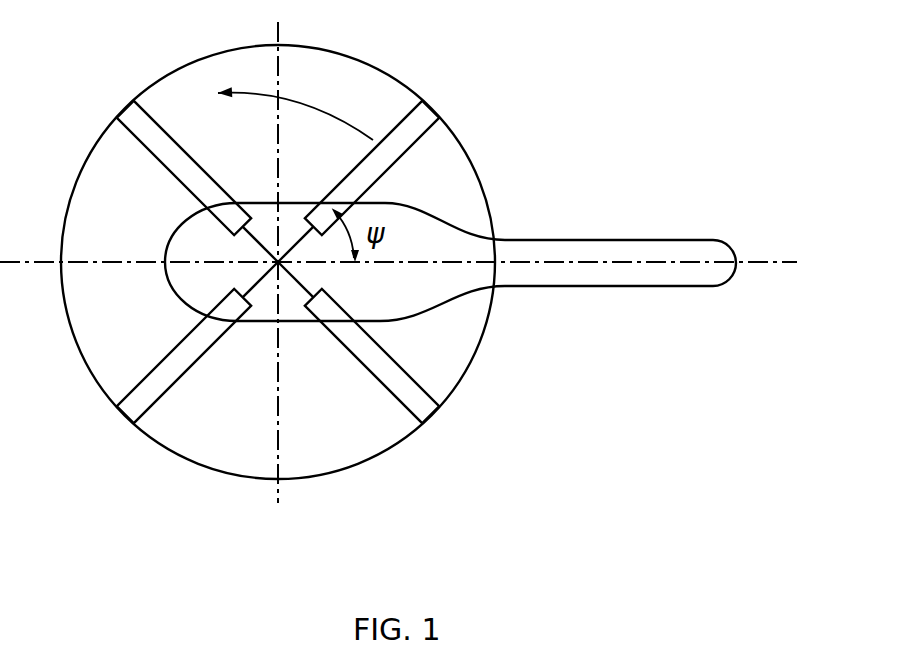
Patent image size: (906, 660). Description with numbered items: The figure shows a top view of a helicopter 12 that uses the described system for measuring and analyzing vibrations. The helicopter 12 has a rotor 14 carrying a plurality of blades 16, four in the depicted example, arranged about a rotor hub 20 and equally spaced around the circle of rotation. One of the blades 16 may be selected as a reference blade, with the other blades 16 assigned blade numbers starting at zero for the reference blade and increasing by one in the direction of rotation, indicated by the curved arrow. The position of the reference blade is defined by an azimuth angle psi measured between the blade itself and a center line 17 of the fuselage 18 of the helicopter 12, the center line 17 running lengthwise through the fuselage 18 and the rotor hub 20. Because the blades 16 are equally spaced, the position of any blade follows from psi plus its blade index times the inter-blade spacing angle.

The helicopter 12 is at (488, 153).
The rotor 14 is at (368, 410).
The blades 16 is at (124, 104).
The center line 17 is at (778, 262).
The fuselage 18 is at (510, 288).
The rotor hub 20 is at (248, 262).